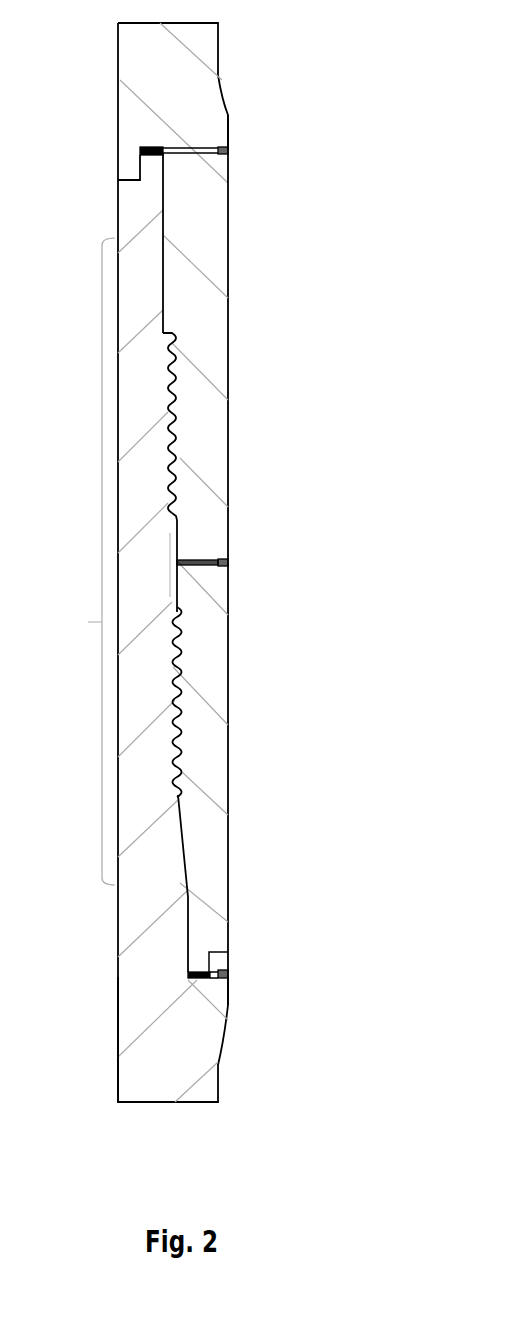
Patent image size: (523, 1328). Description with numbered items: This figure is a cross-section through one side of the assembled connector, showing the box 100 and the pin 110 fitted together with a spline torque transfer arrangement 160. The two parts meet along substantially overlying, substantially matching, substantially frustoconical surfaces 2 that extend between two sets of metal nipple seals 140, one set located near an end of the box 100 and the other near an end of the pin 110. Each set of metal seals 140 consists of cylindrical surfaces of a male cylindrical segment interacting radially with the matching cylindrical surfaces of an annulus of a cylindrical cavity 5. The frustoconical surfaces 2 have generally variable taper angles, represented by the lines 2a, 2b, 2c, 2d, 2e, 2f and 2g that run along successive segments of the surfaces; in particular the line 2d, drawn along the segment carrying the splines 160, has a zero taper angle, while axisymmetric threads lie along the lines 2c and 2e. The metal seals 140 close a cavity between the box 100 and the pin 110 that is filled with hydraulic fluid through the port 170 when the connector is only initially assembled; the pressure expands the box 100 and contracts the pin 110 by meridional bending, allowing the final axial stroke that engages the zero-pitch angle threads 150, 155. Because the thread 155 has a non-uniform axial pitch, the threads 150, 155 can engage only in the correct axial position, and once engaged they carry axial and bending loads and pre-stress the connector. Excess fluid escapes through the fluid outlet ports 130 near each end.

The box 100 is at (226, 87).
The pin 110 is at (229, 1000).
The fluid outlet port 130 is at (231, 148).
The metal seal 140 is at (163, 180).
The zero-pitch angle thread 150 is at (250, 565).
The zero-pitch angle thread with non-uniform axial pitch 155 is at (172, 662).
The spline torque transfer arrangement 160 is at (250, 547).
The port 170 is at (228, 562).
The frustoconical surface 2 is at (90, 627).
The line 2a is at (163, 240).
The line 2b is at (163, 288).
The line 2c is at (166, 388).
The line 2d is at (170, 578).
The line 2e is at (172, 663).
The line 2f is at (182, 822).
The line 2g is at (184, 882).
The cylindrical cavity 5 is at (146, 148).